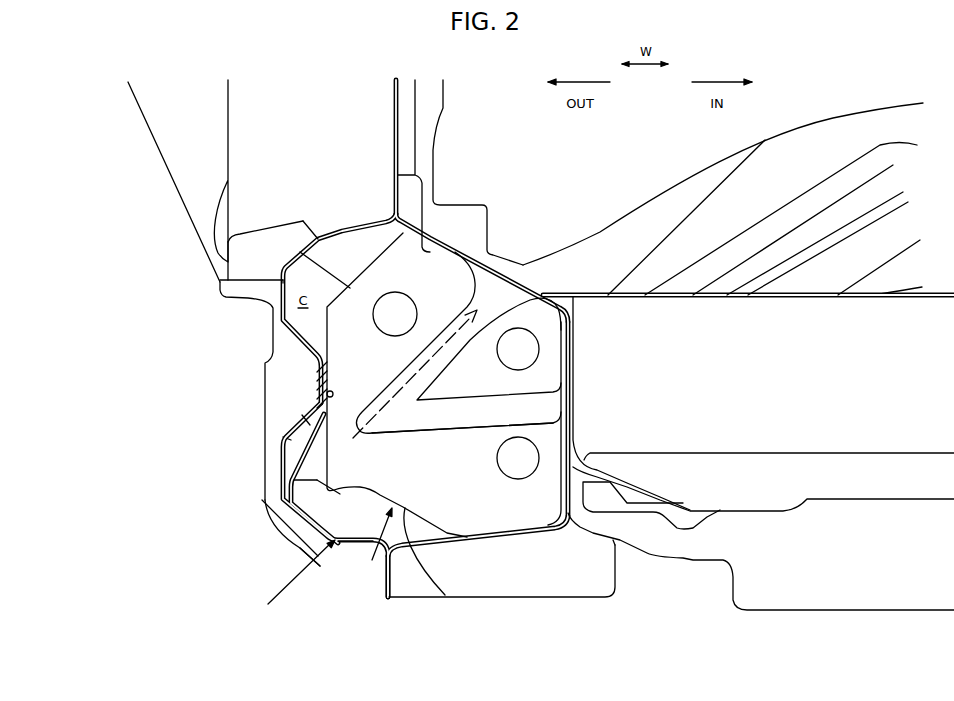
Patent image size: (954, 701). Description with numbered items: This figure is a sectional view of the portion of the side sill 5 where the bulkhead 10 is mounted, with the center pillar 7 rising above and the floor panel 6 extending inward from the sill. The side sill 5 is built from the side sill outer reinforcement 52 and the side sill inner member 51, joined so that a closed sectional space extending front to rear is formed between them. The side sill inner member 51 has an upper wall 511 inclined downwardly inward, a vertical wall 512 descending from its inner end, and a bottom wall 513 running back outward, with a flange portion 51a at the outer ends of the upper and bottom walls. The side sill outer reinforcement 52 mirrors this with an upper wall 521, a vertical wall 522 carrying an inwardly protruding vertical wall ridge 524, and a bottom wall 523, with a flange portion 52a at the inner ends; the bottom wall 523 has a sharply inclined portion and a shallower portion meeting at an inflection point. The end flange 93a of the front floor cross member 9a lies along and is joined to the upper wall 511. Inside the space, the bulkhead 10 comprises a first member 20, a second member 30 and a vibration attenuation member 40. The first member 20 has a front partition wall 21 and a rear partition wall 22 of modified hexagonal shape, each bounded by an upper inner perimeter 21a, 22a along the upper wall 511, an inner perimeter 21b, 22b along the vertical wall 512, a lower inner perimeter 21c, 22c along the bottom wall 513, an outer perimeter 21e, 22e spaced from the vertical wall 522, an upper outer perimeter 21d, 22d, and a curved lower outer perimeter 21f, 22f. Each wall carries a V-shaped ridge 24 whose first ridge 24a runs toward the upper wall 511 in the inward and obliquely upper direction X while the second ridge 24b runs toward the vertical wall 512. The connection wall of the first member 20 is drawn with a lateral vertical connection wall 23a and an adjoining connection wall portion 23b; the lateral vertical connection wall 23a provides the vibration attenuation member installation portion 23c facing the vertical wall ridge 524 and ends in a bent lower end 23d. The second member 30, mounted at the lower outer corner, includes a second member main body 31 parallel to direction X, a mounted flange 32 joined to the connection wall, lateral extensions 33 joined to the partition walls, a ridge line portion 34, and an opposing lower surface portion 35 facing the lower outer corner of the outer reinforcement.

The side sill 5 is at (294, 579).
The floor panel 6 is at (732, 553).
The center pillar 7 is at (258, 142).
The front floor cross member 9a is at (793, 294).
The bulkhead 10 is at (372, 541).
The first member 20 is at (324, 337).
The front partition wall 21 is at (478, 398).
The rear partition wall 22 is at (572, 342).
The upper inner perimeter 21a is at (482, 251).
The upper inner perimeter 22a is at (435, 245).
The inner perimeter 21b is at (621, 419).
The inner perimeter 22b is at (569, 413).
The lower inner perimeter 21c is at (478, 552).
The lower inner perimeter 22c is at (460, 538).
The upper outer perimeter 21d is at (339, 308).
The upper outer perimeter 22d is at (366, 284).
The outer perimeter 21e is at (335, 500).
The outer perimeter 22e is at (329, 462).
The lower outer perimeter 21f is at (451, 586).
The lower outer perimeter 22f is at (445, 595).
The lateral vertical connection wall 23a is at (285, 318).
The side panel flange 23b is at (300, 257).
The vibration attenuation member installation portion 23c is at (327, 395).
The bent lower end 23d is at (317, 523).
The V-shaped ridge 24 is at (451, 380).
The first ridge 24a is at (410, 360).
The second ridge 24b is at (457, 418).
The second member 30 is at (278, 477).
The second member main body 31 is at (283, 461).
The mounted flange 32 is at (283, 437).
The lateral extensions 33 is at (300, 562).
The ridge line portion 34 is at (287, 444).
The opposing lower surface portion 35 is at (262, 500).
The vibration attenuation member 40 is at (318, 380).
The side sill inner member 51 is at (573, 354).
The flange portion 51a is at (401, 197).
The upper wall 511 is at (427, 237).
The vertical wall 512 is at (571, 393).
The bottom wall 513 is at (523, 530).
The side sill outer reinforcement 52 is at (337, 228).
The flange portion 52a is at (392, 205).
The upper wall 521 is at (323, 237).
The vertical wall 522 is at (230, 298).
The bottom wall 523 is at (353, 543).
The vertical wall ridge 524 is at (302, 415).
The end flange 93a is at (522, 264).
The inward and obliquely upper direction X is at (450, 343).